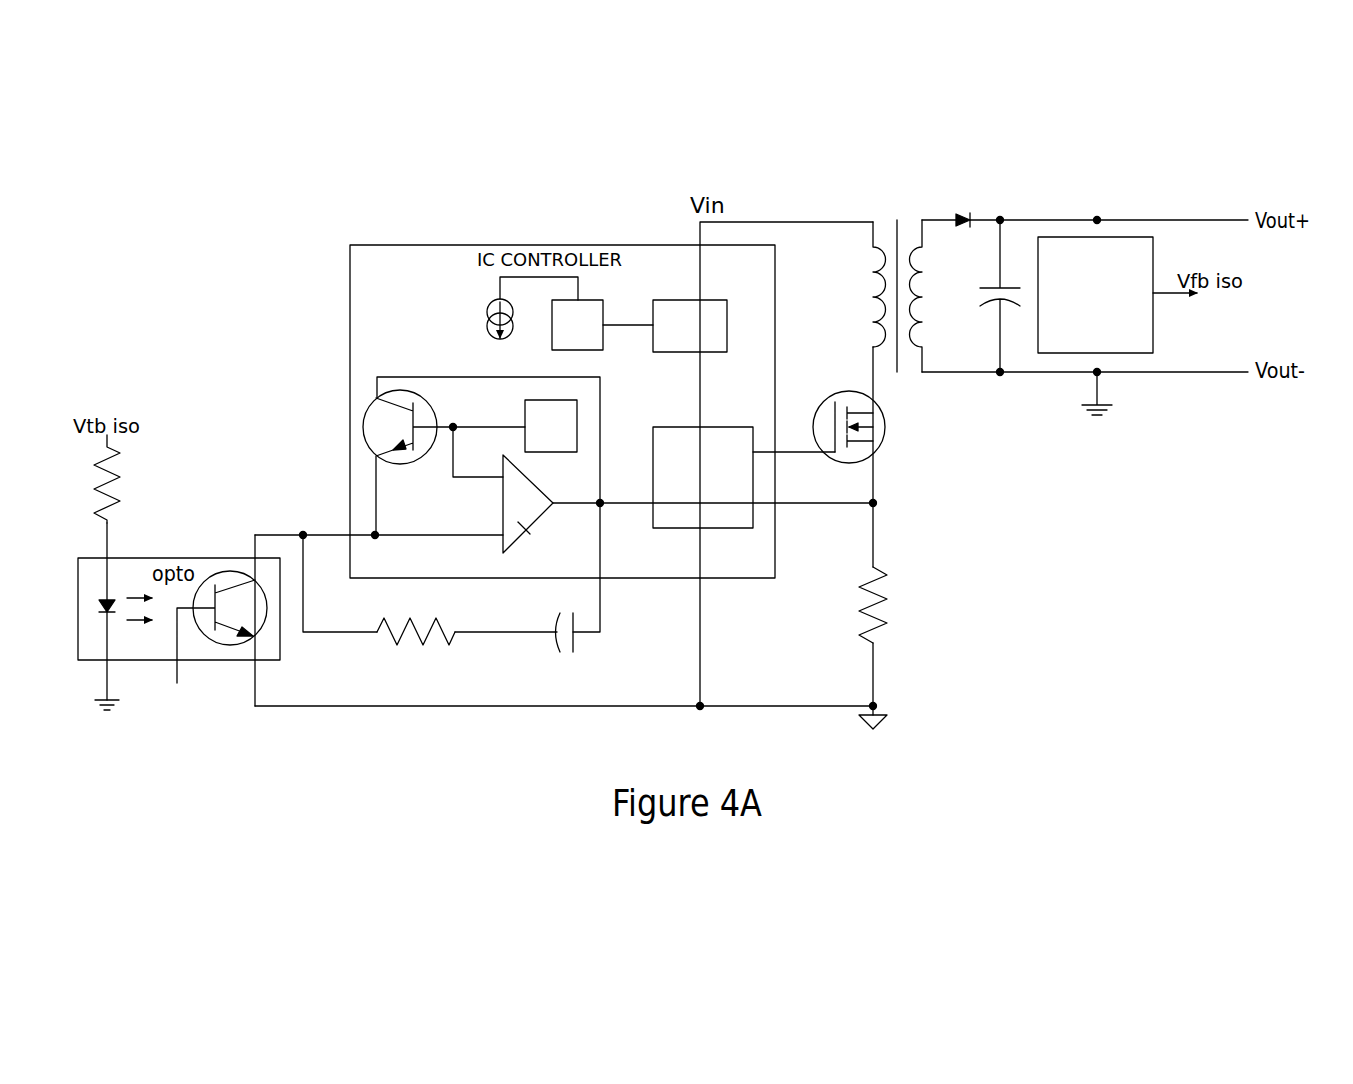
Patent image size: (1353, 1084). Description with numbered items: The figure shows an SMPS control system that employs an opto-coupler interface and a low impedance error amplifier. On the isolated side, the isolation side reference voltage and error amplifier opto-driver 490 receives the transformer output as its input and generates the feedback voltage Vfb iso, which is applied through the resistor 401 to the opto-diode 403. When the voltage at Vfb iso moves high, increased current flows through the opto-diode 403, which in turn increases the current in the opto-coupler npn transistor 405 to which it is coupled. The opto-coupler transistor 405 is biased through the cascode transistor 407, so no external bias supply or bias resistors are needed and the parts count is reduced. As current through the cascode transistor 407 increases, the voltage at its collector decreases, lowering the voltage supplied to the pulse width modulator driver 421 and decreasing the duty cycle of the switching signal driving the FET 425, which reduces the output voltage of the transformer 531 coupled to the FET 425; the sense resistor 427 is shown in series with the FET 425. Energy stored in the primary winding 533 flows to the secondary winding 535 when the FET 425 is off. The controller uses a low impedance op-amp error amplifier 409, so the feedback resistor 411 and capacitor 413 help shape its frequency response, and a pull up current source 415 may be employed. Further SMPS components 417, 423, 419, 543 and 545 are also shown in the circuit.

The resistor 401 is at (127, 450).
The opto-diode 403 is at (95, 603).
The opto-coupler npn transistor 405 is at (240, 647).
The cascode transistor 407 is at (372, 407).
The op-amp error amplifier 409 is at (533, 528).
The feedback resistor 411 is at (437, 645).
The capacitor 413 is at (580, 643).
The pull up current source 415 is at (483, 308).
The SMPS component 417 is at (577, 345).
The SMPS component 419 is at (715, 340).
The pulse width modulator (PWM) driver 421 is at (737, 440).
The SMPS component 423 is at (537, 400).
The FET 425 is at (853, 455).
The sense resistor Rsense 427 is at (888, 612).
The transformer 531 is at (897, 273).
The primary winding 533 is at (873, 288).
The secondary winding 535 is at (922, 285).
The SMPS component 543 is at (972, 213).
The SMPS component 545 is at (1000, 260).
The isolation side reference voltage (Vref) and error amplifier opto-driver 490 is at (1140, 273).